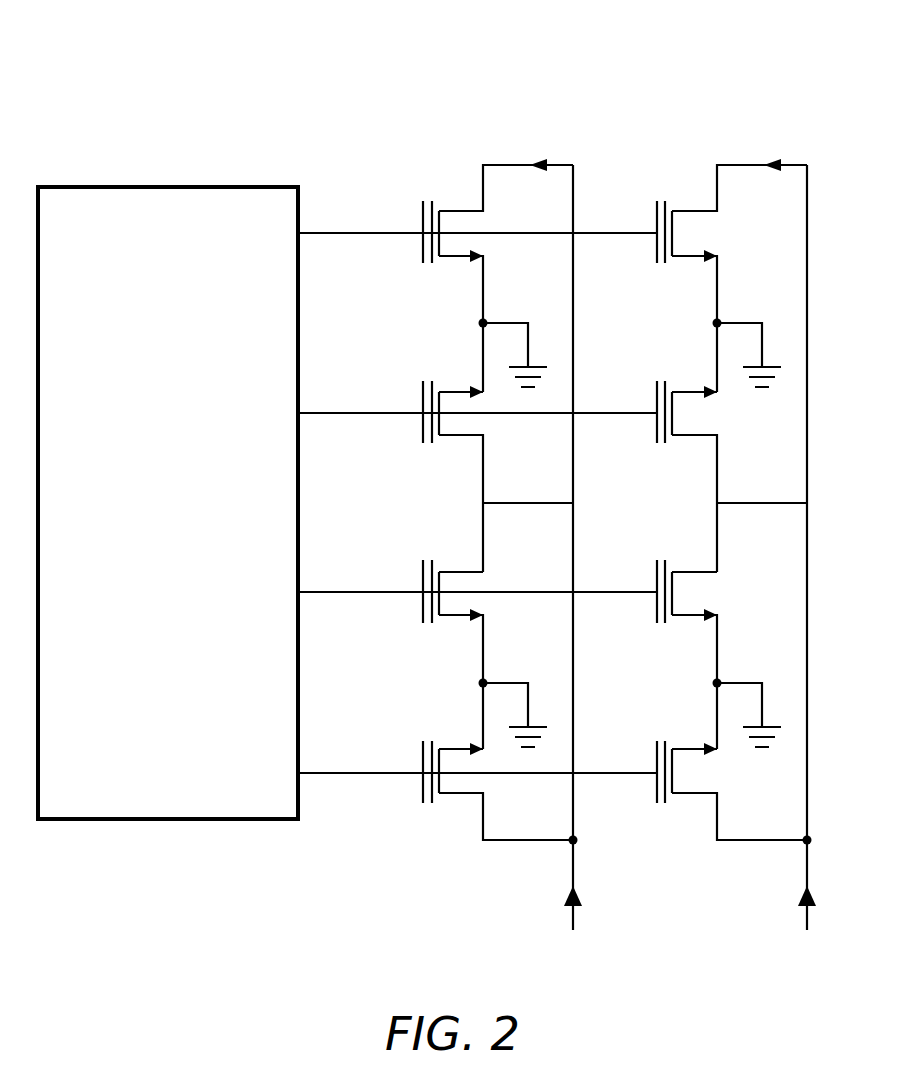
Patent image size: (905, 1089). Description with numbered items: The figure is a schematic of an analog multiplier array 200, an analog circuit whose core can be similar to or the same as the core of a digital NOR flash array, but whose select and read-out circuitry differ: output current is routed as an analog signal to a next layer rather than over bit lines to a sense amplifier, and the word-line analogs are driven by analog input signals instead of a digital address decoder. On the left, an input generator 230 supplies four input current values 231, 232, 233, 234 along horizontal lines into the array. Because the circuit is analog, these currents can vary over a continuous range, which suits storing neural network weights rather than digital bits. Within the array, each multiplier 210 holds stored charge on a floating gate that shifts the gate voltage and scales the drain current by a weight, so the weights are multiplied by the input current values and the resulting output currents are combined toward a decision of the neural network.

The analog multiplier array 200 is at (710, 79).
The multiplier 210 is at (445, 161).
The input generator 230 is at (135, 822).
The input current value 231 is at (370, 198).
The input current value 232 is at (370, 378).
The input current value 233 is at (370, 558).
The input current value 234 is at (370, 738).